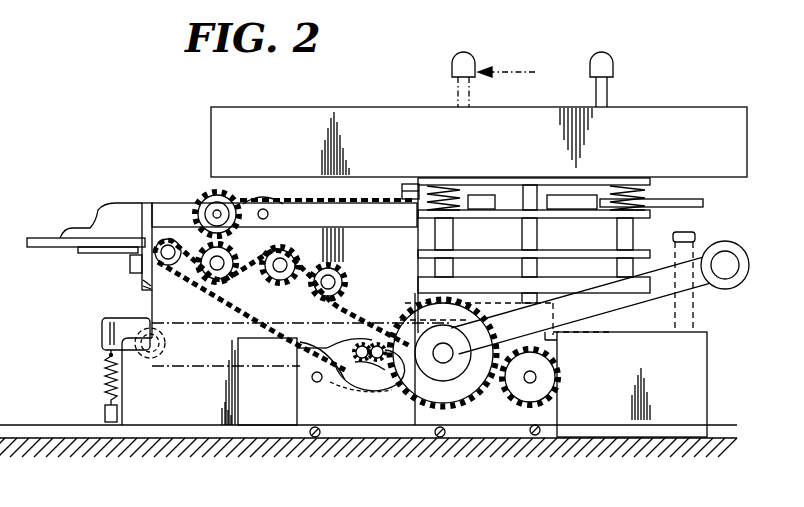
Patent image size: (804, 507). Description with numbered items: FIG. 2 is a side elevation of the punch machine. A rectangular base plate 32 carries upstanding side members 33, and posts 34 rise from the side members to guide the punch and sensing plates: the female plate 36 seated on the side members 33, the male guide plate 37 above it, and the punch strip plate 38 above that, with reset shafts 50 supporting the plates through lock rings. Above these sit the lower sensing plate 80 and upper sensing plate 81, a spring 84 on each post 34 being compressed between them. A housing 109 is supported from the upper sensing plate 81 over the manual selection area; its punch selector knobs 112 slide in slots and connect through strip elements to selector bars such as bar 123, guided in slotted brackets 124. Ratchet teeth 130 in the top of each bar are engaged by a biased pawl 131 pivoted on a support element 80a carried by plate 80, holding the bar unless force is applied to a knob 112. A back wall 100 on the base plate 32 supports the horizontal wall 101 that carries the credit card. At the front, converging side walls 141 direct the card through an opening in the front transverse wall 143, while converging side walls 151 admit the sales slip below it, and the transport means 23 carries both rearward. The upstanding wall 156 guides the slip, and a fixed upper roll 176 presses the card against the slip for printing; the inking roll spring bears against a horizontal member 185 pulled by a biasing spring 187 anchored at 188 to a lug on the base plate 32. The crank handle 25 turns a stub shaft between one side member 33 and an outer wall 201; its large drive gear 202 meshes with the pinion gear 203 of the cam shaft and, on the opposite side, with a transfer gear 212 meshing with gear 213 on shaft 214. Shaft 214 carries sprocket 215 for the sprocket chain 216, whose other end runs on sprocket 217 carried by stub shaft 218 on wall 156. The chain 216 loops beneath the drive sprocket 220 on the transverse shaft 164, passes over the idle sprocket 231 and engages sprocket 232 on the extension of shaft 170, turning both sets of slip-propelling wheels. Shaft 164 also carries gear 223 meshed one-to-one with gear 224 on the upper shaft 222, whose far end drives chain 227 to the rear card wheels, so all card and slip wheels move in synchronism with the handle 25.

The transport means 23 is at (165, 170).
The crank handle 25 is at (703, 248).
The base plate 32 is at (40, 425).
The side members 33 is at (700, 370).
The posts 34 is at (634, 226).
The female plate 36 is at (680, 316).
The male guide plate 37 is at (565, 282).
The punch strip plate 38 is at (470, 258).
The reset shafts 50 is at (537, 230).
The lower sensing plate 80 is at (310, 217).
The support element 80a is at (395, 200).
The upper sensing plate 81 is at (650, 180).
The spring 84 is at (642, 199).
The back wall 100 is at (690, 332).
The horizontal wall 101 is at (673, 236).
The housing 109 is at (312, 112).
The punch selector knobs 112 is at (612, 65).
The punch selector bar 123 is at (700, 206).
The brackets 124 is at (472, 203).
The ratchet teeth 130 is at (522, 200).
The pawl 131 is at (416, 190).
The converging side walls 141 is at (112, 213).
The front transverse wall 143 is at (147, 205).
The side walls 151 is at (77, 233).
The wall 156 is at (168, 412).
The transverse shaft 164 is at (217, 270).
The transverse shaft 170 is at (338, 278).
The upper roll 176 is at (258, 202).
The horizontal member 185 is at (124, 320).
The biasing spring 187 is at (107, 372).
The spring anchor connection 188 is at (106, 416).
The upstanding wall 201 is at (500, 430).
The drive gear 202 is at (390, 400).
The pinion gear 203 is at (560, 382).
The transfer gear 212 is at (405, 381).
The gear 213 is at (341, 391).
The shaft 214 is at (340, 340).
The sprocket 215 is at (364, 318).
The sprocket chain 216 is at (346, 292).
The sprocket 217 is at (188, 285).
The stub shaft 218 is at (155, 252).
The drive sprocket 220 is at (252, 262).
The upper shaft 222 is at (213, 213).
The gear 223 is at (240, 278).
The gear 224 is at (212, 198).
The chain 227 is at (350, 202).
The idle sprocket 231 is at (279, 292).
The sprocket 232 is at (340, 268).